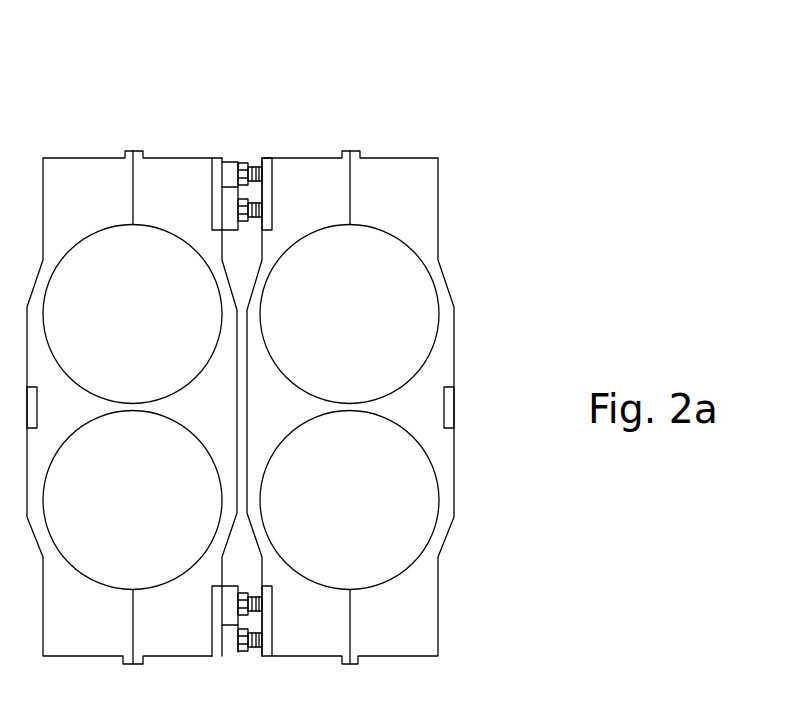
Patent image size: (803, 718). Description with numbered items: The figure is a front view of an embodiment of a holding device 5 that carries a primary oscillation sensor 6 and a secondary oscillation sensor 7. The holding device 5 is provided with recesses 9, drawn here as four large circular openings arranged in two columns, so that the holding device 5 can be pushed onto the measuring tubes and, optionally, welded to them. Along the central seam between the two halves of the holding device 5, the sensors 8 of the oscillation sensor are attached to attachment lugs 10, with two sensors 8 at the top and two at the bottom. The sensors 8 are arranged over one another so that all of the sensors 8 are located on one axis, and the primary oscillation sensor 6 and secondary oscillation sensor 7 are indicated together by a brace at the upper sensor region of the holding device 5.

The holding device 5 is at (295, 364).
The primary oscillation sensor 6 is at (272, 93).
The secondary oscillation sensor 7 is at (350, 373).
The sensors 8 is at (238, 198).
The recesses 9 is at (190, 283).
The attachment lugs 10 is at (265, 160).